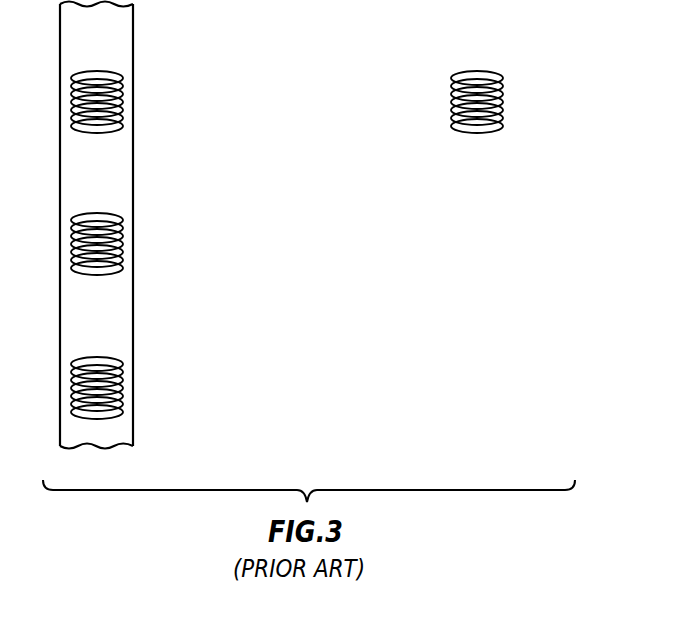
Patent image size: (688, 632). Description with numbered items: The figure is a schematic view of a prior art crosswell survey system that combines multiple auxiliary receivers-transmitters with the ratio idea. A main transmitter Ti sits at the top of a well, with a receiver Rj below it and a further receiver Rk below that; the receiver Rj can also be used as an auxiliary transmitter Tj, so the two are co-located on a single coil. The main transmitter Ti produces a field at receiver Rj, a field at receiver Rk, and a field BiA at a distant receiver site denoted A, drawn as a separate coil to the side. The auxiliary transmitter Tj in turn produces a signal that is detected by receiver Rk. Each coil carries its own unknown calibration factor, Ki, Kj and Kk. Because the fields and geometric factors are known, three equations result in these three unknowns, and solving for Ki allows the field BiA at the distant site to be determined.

The transmitter coil calibration factor Ki is at (120, 102).
The auxiliary coil calibration factor Kj is at (120, 244).
The receiver coil calibration factor Kk is at (123, 388).
The field at distant receiver BiA is at (505, 102).
The main transmitter Ti is at (97, 84).
The receiver Rj is at (94, 227).
The auxiliary transmitter Tj is at (97, 227).
The receiver Rk is at (97, 371).